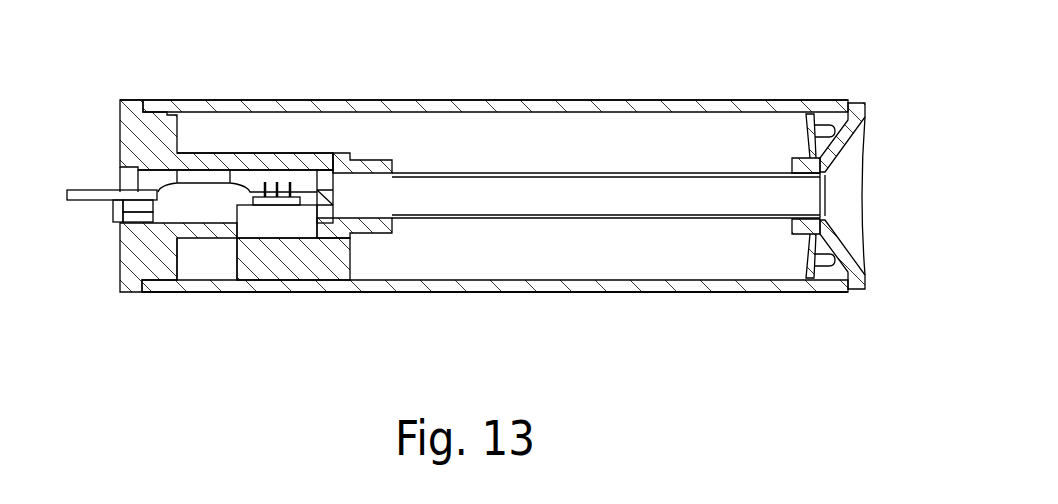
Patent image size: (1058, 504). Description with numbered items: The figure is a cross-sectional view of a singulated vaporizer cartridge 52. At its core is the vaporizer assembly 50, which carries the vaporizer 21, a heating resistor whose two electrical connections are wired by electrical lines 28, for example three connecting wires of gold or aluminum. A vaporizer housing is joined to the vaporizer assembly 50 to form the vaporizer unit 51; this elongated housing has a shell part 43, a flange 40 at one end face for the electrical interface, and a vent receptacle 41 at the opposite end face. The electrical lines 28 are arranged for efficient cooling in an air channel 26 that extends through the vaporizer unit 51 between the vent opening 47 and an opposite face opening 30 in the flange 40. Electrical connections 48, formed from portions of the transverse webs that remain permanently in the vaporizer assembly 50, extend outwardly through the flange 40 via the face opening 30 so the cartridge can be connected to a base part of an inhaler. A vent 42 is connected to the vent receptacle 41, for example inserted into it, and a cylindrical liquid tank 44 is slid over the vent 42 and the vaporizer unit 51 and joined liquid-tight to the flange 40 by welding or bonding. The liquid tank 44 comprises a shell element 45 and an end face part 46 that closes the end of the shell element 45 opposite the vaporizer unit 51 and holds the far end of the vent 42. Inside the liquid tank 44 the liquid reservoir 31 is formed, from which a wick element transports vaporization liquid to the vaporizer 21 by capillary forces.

The vaporizer 21 is at (295, 188).
The air channel 26 is at (173, 205).
The electrical lines 28 is at (290, 182).
The face opening 30 is at (122, 172).
The liquid reservoir 31 is at (680, 137).
The flange 40 is at (133, 107).
The vent receptacle 41 is at (358, 168).
The vent 42 is at (505, 200).
The shell part 43 is at (225, 157).
The liquid tank 44 is at (497, 105).
The shell element 45 is at (495, 156).
The end face part 46 is at (857, 117).
The vent opening 47 is at (363, 222).
The electrical connections 48 is at (90, 201).
The vaporizer assembly 50 is at (232, 199).
The vaporizer unit 51 is at (278, 252).
The vaporizer cartridge 52 is at (618, 296).